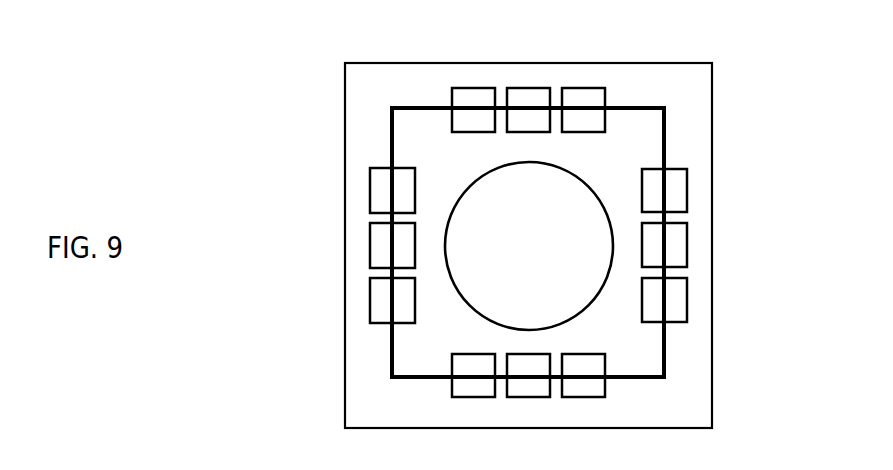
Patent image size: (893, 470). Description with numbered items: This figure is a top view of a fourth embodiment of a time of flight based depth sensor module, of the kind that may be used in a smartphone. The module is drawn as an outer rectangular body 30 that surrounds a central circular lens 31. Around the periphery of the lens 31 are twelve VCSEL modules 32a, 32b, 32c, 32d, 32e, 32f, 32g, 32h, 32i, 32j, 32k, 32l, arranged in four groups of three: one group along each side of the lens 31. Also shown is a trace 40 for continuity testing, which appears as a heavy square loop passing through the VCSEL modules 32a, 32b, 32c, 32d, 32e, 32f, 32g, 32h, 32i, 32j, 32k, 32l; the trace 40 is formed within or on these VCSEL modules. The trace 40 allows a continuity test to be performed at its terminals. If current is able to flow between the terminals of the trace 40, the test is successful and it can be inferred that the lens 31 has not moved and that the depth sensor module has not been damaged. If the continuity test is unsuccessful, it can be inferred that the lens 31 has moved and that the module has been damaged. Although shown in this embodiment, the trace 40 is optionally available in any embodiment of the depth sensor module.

The substrate 30 is at (345, 130).
The lens 31 is at (473, 180).
The trace 40 is at (657, 107).
The VCSEL module 32a is at (458, 87).
The VCSEL module 32b is at (523, 87).
The VCSEL module 32c is at (583, 87).
The VCSEL module 32d is at (685, 190).
The VCSEL module 32e is at (685, 243).
The VCSEL module 32f is at (685, 295).
The VCSEL module 32g is at (578, 398).
The VCSEL module 32h is at (518, 398).
The VCSEL module 32i is at (473, 398).
The VCSEL module 32j is at (372, 292).
The VCSEL module 32k is at (372, 239).
The VCSEL module 32l is at (370, 192).